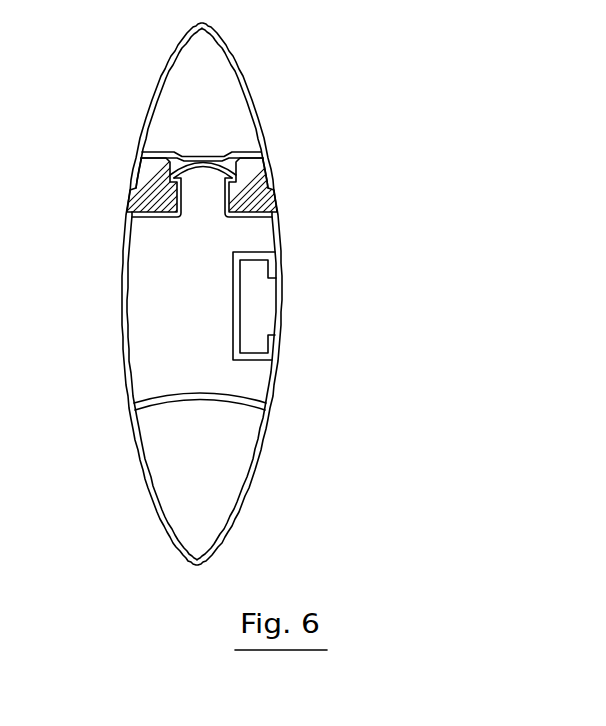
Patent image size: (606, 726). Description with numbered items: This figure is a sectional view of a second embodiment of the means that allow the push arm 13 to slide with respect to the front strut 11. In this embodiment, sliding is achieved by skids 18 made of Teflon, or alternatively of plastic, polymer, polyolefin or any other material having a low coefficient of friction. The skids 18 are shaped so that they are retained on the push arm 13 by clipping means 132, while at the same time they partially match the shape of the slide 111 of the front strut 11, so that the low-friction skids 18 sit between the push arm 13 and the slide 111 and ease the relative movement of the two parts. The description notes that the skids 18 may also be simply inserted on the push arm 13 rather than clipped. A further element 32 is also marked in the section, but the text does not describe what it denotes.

The front strut 11 is at (123, 326).
The slide 111 is at (203, 172).
The push arm 13 is at (143, 123).
The clipping means 132 is at (268, 187).
The skids 18 is at (127, 211).
The partition wall 32 is at (132, 188).